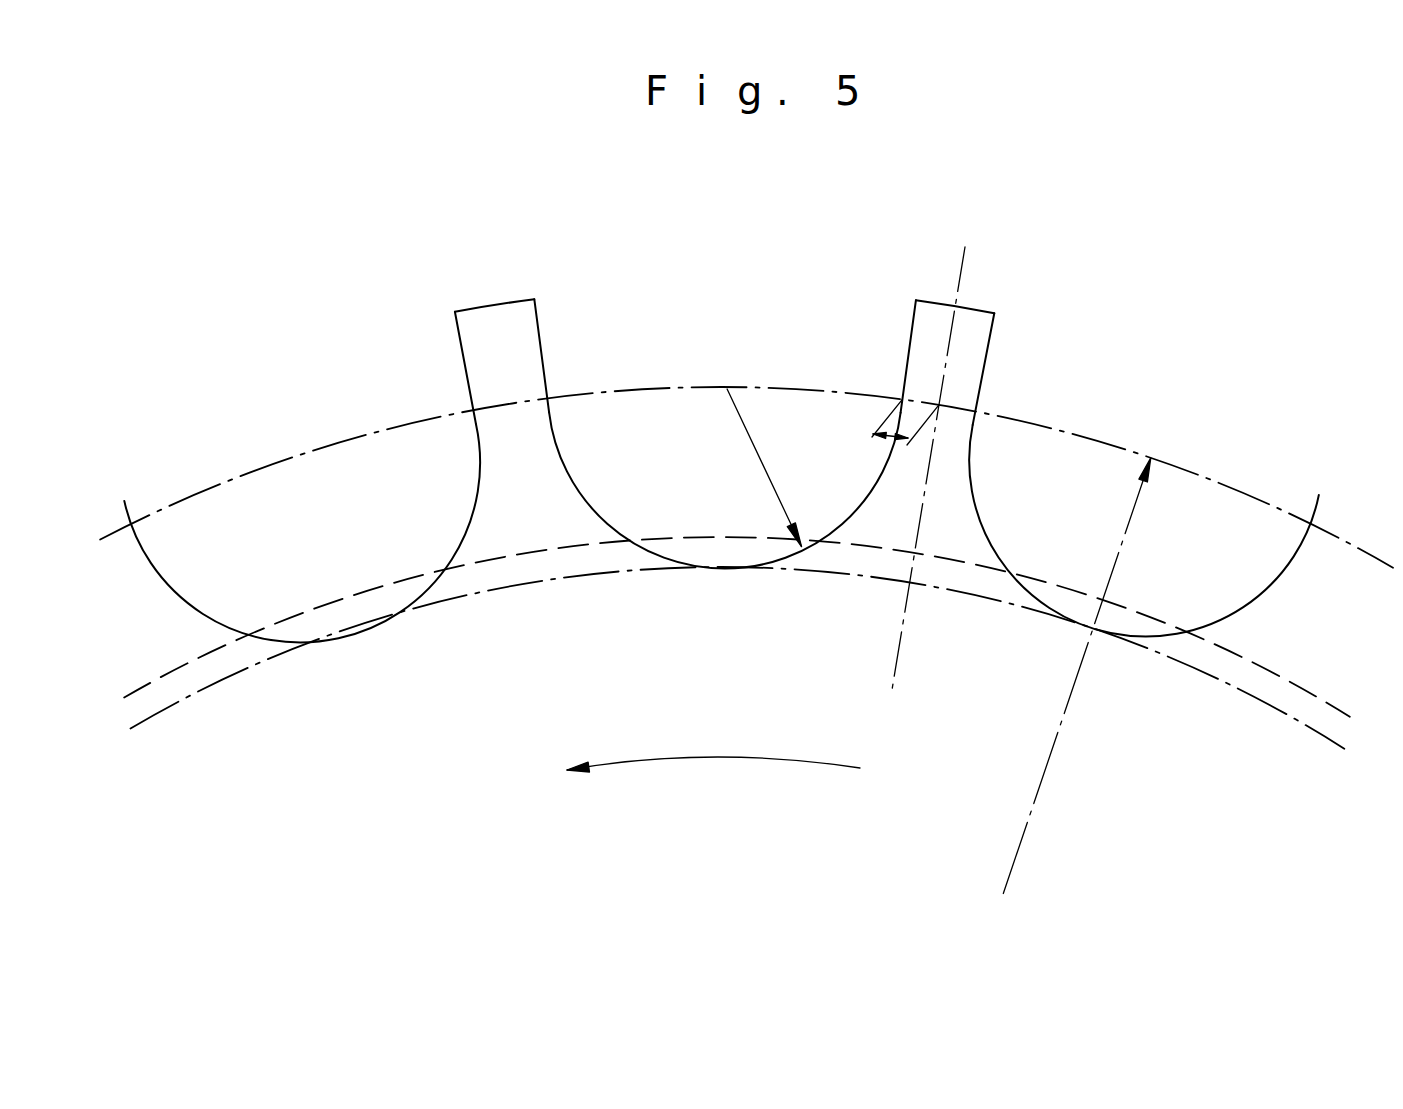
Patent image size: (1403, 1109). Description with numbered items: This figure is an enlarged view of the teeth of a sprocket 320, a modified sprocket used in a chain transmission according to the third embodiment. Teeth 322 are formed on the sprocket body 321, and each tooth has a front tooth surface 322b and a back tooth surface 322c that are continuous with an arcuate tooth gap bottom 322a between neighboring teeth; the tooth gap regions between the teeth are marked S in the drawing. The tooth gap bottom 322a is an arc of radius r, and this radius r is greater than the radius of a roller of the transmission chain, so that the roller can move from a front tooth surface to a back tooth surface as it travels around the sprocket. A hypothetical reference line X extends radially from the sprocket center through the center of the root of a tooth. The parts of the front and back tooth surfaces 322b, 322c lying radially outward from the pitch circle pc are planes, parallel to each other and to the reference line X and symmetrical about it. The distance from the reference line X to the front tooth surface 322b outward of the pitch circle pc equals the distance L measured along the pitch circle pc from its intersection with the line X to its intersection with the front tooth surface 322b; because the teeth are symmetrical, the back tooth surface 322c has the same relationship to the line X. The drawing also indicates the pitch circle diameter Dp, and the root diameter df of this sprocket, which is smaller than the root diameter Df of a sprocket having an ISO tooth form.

The sprocket 320 is at (731, 429).
The sprocket body 321 is at (442, 822).
The teeth 322 is at (500, 306).
The tooth gap bottom 322a is at (313, 632).
The front tooth surface 322b is at (458, 343).
The back tooth surface 322c is at (540, 328).
The tooth space S is at (203, 510).
The pitch circle pc is at (1227, 482).
The hypothetical reference line X is at (934, 446).
The distance L is at (885, 438).
The radius r is at (765, 472).
The root diameter of ISO tooth form sprocket Df is at (964, 562).
The pitch circle diameter Dp is at (1063, 703).
The root diameter df is at (1244, 692).